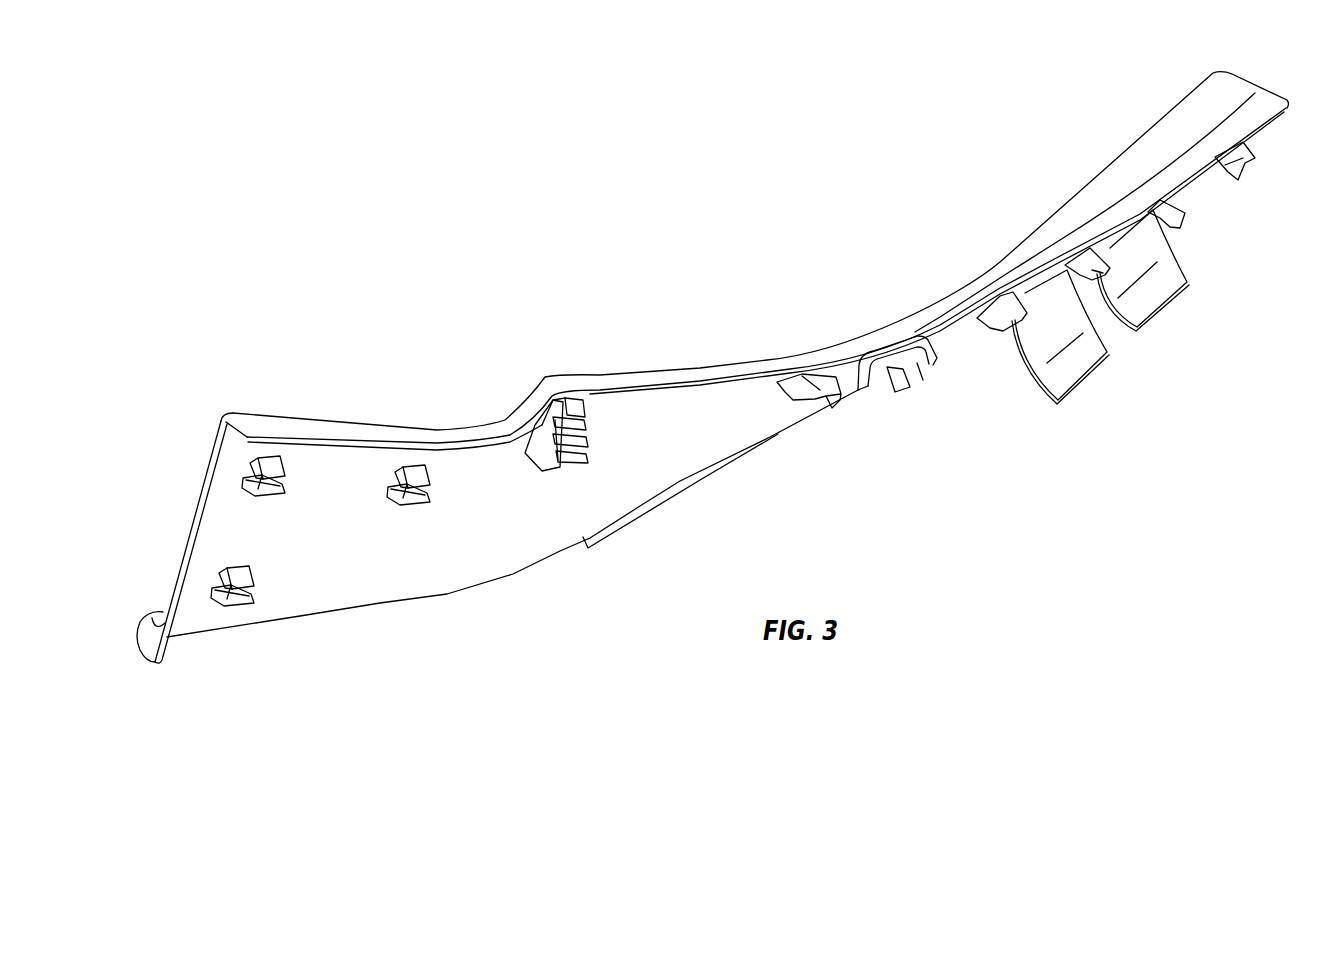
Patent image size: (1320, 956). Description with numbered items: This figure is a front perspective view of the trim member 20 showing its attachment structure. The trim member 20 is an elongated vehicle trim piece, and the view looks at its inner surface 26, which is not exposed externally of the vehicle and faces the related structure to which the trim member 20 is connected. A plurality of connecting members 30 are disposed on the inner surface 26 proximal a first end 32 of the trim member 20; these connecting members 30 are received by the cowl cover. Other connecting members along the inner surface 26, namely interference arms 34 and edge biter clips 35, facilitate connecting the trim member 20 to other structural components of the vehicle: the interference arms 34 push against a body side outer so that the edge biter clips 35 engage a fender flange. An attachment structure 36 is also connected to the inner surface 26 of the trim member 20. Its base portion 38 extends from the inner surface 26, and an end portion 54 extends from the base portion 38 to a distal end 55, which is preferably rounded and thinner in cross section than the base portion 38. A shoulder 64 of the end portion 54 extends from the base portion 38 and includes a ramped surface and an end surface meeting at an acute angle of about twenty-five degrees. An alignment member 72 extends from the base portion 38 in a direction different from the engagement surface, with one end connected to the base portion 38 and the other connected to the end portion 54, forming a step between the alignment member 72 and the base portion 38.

The trim member 20 is at (648, 372).
The inner surface 26 is at (533, 536).
The connecting members 30 is at (250, 468).
The first end 32 is at (172, 592).
The interference arms 34 is at (1085, 382).
The edge biter clips 35 is at (824, 393).
The attachment structure 36 is at (604, 427).
The base portion 38 is at (527, 435).
The end portion 54 is at (592, 457).
The distal end 55 is at (579, 456).
The shoulder 64 is at (578, 465).
The alignment member 72 is at (586, 420).